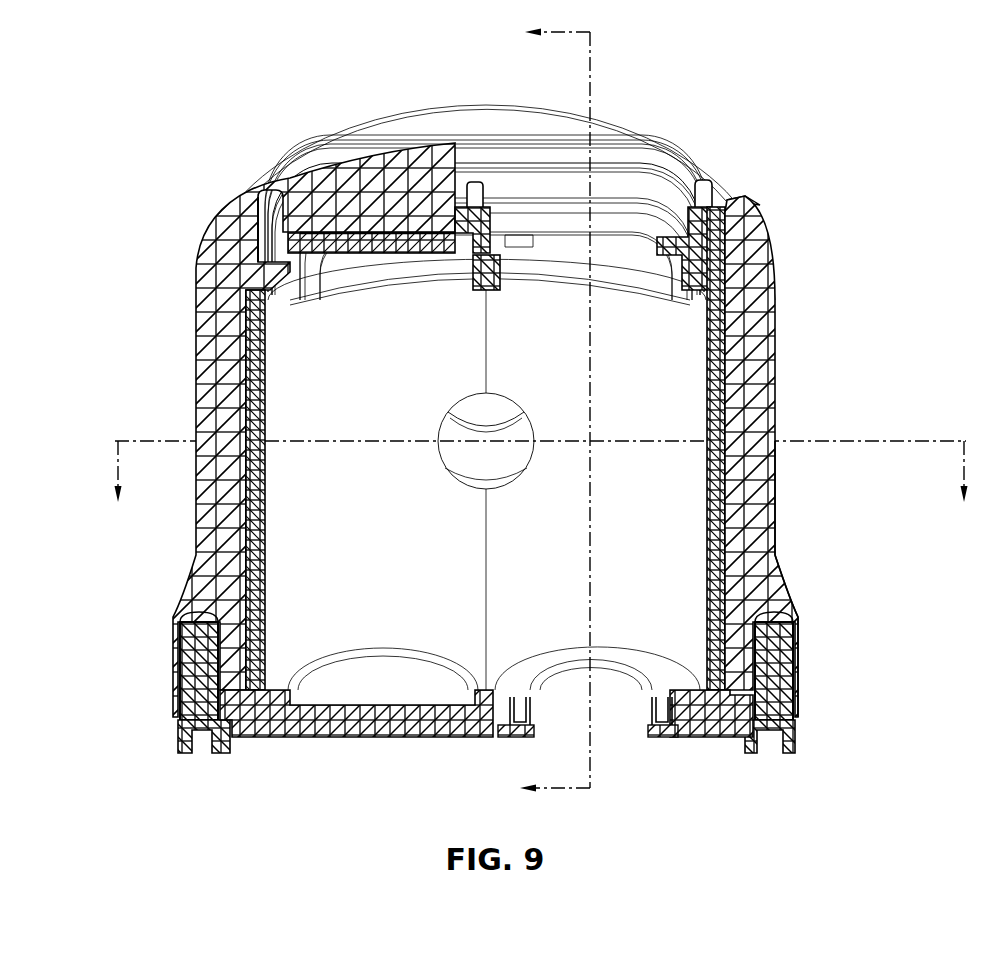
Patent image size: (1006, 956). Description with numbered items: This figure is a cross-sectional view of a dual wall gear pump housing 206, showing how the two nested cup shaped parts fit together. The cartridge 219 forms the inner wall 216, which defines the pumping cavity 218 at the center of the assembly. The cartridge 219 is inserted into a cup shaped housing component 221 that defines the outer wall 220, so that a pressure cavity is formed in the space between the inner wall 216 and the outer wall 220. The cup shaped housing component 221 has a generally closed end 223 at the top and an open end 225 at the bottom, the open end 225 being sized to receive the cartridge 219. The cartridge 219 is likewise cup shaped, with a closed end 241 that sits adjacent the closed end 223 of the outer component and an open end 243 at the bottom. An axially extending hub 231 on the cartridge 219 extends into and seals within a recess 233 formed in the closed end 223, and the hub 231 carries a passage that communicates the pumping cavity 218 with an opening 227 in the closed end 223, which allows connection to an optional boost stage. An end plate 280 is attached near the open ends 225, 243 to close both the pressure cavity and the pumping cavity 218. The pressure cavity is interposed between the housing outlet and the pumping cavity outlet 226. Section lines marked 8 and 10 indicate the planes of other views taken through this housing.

The housing 206 is at (525, 438).
The inner wall 216 is at (716, 413).
The pumping cavity 218 is at (310, 362).
The cartridge 219 is at (732, 332).
The outer wall 220 is at (737, 472).
The cup shaped housing component 221 is at (805, 578).
The closed end 223 is at (317, 172).
The open end 225 is at (277, 642).
The pumping cavity outlet 226 is at (468, 470).
The opening 227 is at (638, 103).
The hub 231 is at (735, 206).
The recess 233 is at (480, 140).
The closed end 241 is at (384, 246).
The open end 243 is at (243, 700).
The end plate 280 is at (710, 705).
The section line 8 is at (539, 488).
The section line 10 is at (531, 413).